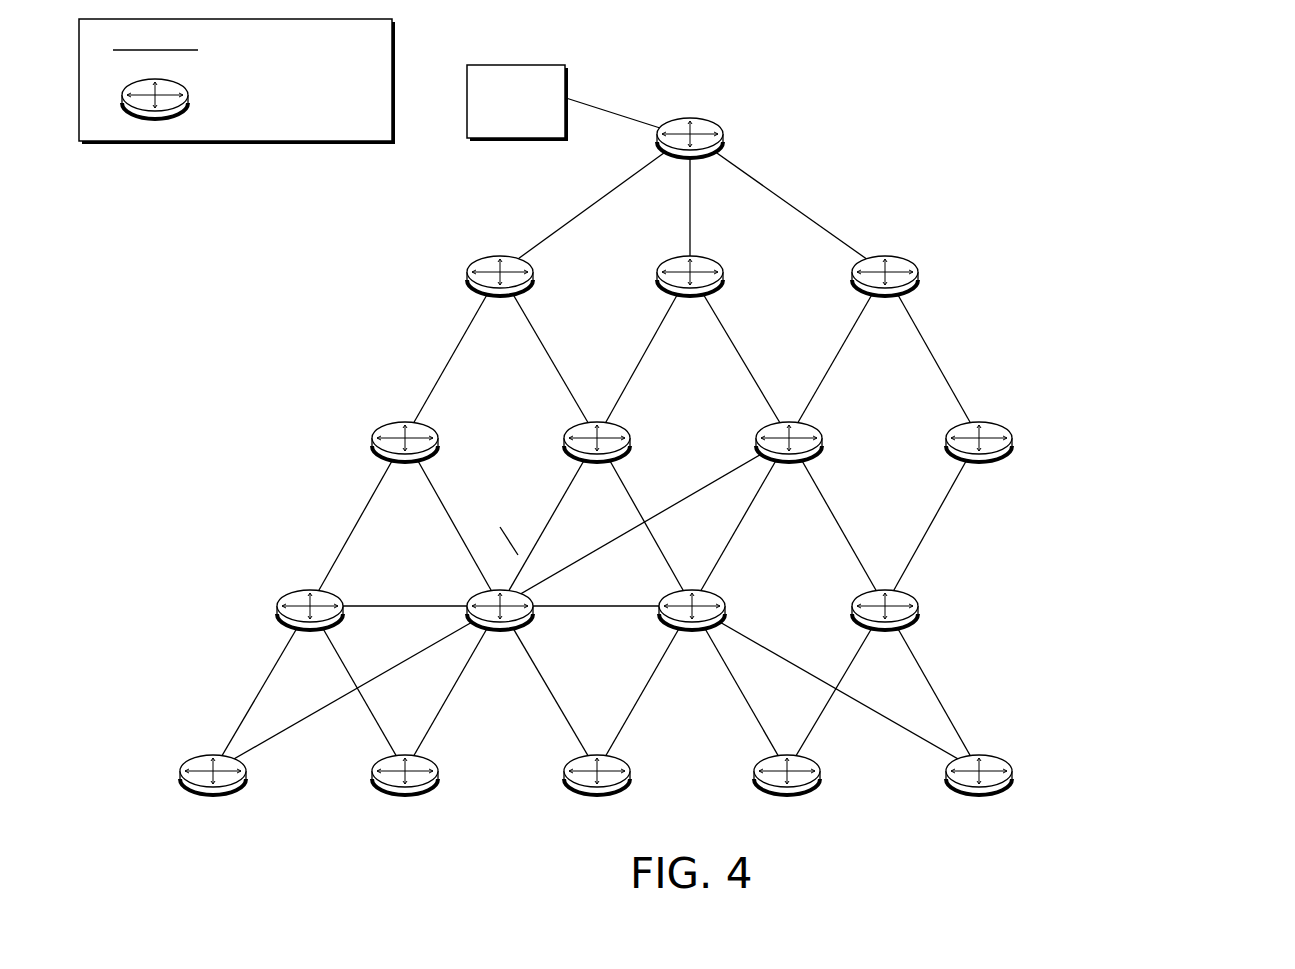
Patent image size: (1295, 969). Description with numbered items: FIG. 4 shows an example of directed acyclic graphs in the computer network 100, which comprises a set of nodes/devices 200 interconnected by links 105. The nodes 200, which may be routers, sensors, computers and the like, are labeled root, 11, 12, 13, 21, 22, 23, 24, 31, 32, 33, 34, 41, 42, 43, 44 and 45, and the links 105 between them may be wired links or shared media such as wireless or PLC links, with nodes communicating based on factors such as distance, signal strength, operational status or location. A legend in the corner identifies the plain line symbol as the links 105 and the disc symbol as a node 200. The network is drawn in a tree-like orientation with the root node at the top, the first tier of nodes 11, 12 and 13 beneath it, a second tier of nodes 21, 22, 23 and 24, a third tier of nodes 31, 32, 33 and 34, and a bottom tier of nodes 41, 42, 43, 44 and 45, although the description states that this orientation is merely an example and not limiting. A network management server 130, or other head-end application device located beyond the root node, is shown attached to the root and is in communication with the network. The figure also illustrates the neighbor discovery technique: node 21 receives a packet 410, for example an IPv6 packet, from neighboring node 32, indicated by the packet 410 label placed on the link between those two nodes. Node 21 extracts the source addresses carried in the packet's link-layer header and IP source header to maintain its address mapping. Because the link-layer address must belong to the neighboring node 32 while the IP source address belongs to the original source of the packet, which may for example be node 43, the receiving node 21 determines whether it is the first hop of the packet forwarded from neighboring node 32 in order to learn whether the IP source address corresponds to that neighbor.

The computer network 100 is at (1201, 78).
The links 105 is at (546, 405).
The nodes/devices 200 is at (226, 99).
The network management server (NMS) 130 is at (498, 125).
The packet 410 is at (458, 458).
The node 11 is at (500, 297).
The node 12 is at (690, 297).
The node 13 is at (885, 297).
The node 21 is at (405, 463).
The node 22 is at (597, 463).
The node 23 is at (789, 463).
The node 24 is at (979, 463).
The node 31 is at (310, 630).
The node 32 is at (500, 630).
The node 33 is at (692, 630).
The node 34 is at (885, 630).
The node 41 is at (213, 795).
The node 42 is at (405, 795).
The node 43 is at (597, 795).
The node 44 is at (787, 795).
The node 45 is at (979, 795).